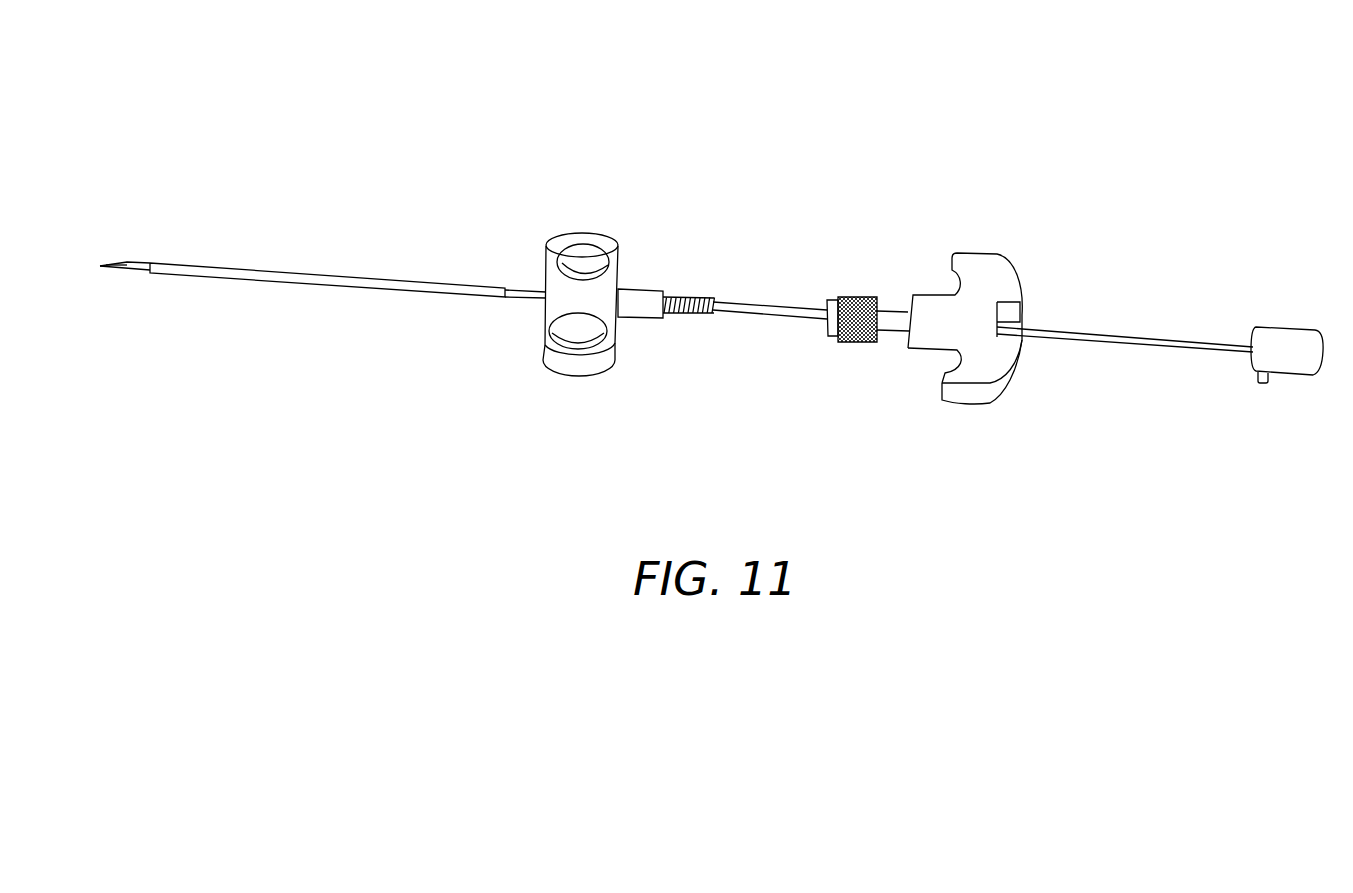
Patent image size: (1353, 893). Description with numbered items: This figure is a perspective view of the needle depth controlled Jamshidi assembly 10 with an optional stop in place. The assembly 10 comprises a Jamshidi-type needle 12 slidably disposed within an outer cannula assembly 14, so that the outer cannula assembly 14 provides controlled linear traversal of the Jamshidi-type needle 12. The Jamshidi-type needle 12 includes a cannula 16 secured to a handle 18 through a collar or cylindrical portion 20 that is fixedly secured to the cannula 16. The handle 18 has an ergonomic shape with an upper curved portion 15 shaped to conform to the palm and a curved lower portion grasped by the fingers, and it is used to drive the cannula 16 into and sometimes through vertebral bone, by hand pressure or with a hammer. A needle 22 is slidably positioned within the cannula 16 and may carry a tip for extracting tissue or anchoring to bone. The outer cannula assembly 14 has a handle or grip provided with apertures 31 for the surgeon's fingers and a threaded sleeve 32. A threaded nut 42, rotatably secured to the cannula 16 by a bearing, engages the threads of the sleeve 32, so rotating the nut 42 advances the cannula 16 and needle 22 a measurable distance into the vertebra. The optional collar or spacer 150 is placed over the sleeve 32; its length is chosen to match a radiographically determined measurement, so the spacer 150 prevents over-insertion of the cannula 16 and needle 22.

The needle depth controlled Jamshidi assembly 10 is at (768, 187).
The Jamshidi-type needle 12 is at (998, 257).
The outer cannula assembly 14 is at (397, 283).
The upper curved portion 15 is at (1010, 384).
The cannula 16 is at (752, 305).
The handle 18 is at (962, 373).
The collar or cylindrical portion 20 is at (890, 316).
The needle 22 is at (1123, 337).
The apertures 31 is at (612, 250).
The threaded sleeve 32 is at (674, 315).
The threaded nut 42 is at (843, 343).
The collar or spacer 150 is at (652, 298).